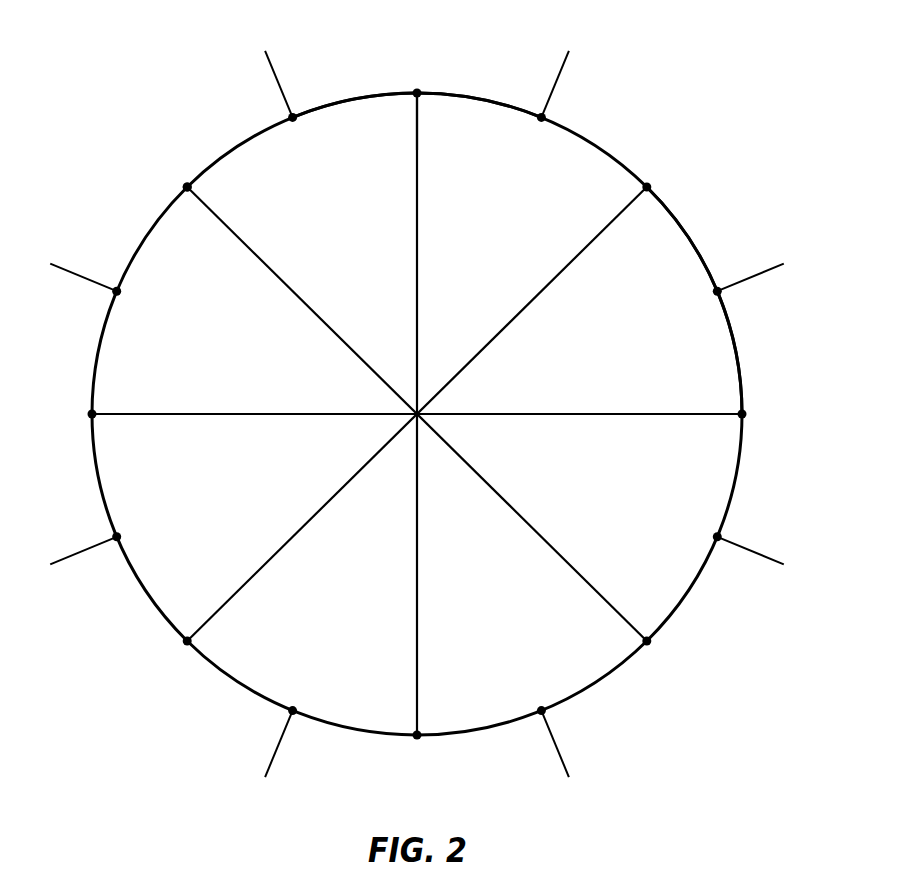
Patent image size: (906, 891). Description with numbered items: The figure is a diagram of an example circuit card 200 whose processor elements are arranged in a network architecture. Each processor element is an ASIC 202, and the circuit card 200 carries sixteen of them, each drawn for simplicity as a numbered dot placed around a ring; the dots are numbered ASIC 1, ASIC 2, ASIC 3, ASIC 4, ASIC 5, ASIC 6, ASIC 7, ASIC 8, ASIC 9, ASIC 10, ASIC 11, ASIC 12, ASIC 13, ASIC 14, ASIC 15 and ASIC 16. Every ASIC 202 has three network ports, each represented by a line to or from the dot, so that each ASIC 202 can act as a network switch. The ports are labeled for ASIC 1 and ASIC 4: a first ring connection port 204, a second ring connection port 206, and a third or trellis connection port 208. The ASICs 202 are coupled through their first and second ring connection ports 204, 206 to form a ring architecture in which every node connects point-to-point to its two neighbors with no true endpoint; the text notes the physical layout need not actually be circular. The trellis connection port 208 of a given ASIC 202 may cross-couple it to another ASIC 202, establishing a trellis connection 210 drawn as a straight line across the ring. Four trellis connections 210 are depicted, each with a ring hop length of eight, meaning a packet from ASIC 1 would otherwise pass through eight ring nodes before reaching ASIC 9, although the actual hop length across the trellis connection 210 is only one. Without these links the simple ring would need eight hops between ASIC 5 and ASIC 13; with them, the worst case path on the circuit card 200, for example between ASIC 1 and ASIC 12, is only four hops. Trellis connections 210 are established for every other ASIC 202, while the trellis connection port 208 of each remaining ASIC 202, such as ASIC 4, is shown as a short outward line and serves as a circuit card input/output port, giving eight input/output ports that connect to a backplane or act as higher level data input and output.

The circuit card 200 is at (421, 403).
The ASIC 202 is at (193, 188).
The first ring connection port 204 is at (398, 97).
The second ring connection port 206 is at (468, 97).
The trellis connection port 208 is at (423, 108).
The trellis connection 210 is at (282, 278).
The ASIC number 1 is at (417, 71).
The ASIC number 2 is at (544, 93).
The ASIC number 3 is at (660, 170).
The ASIC number 4 is at (732, 274).
The ASIC number 5 is at (761, 417).
The ASIC number 6 is at (738, 540).
The ASIC number 7 is at (661, 661).
The ASIC number 8 is at (554, 730).
The ASIC number 9 is at (417, 759).
The ASIC number 10 is at (274, 730).
The ASIC number 11 is at (168, 660).
The ASIC number 12 is at (91, 540).
The ASIC number 13 is at (71, 417).
The ASIC number 14 is at (98, 274).
The ASIC number 15 is at (168, 170).
The ASIC number 16 is at (291, 94).